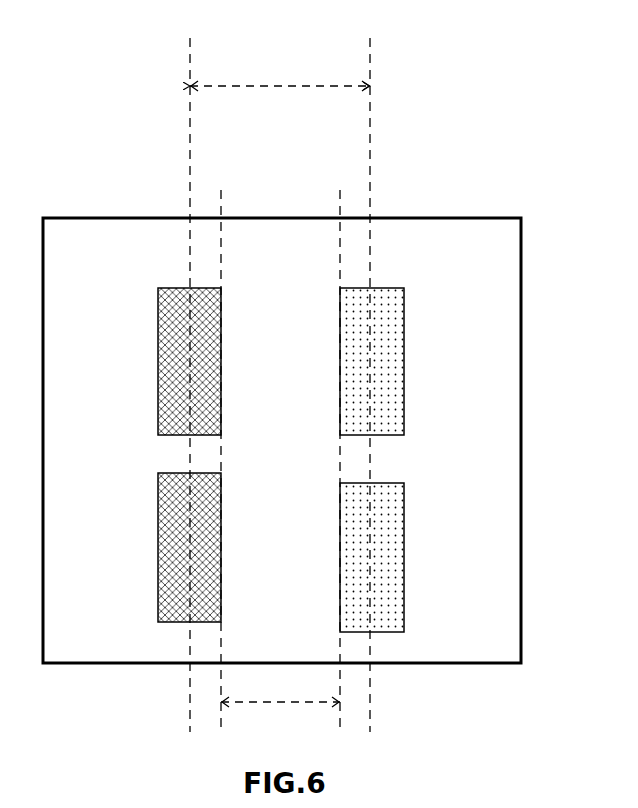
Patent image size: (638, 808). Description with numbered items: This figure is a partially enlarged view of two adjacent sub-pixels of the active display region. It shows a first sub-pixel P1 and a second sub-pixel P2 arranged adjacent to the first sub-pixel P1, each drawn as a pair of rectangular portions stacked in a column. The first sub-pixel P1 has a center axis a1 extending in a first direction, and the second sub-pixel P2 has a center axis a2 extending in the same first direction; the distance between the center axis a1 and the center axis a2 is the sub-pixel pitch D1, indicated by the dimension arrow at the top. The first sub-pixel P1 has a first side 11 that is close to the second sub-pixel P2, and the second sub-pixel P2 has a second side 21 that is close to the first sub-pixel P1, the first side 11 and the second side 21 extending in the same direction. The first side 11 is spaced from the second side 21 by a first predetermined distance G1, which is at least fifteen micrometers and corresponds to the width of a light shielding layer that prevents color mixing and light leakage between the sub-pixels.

The first sub-pixel P1 is at (404, 286).
The second sub-pixel P2 is at (165, 288).
The first side of the first sub-pixel 11 is at (339, 325).
The second side of the second sub-pixel 21 is at (222, 322).
The center axis of the first sub-pixel a1 is at (374, 370).
The center axis of the second sub-pixel a2 is at (194, 370).
The sub-pixel pitch D1 is at (280, 66).
The first predetermined distance G1 is at (280, 688).